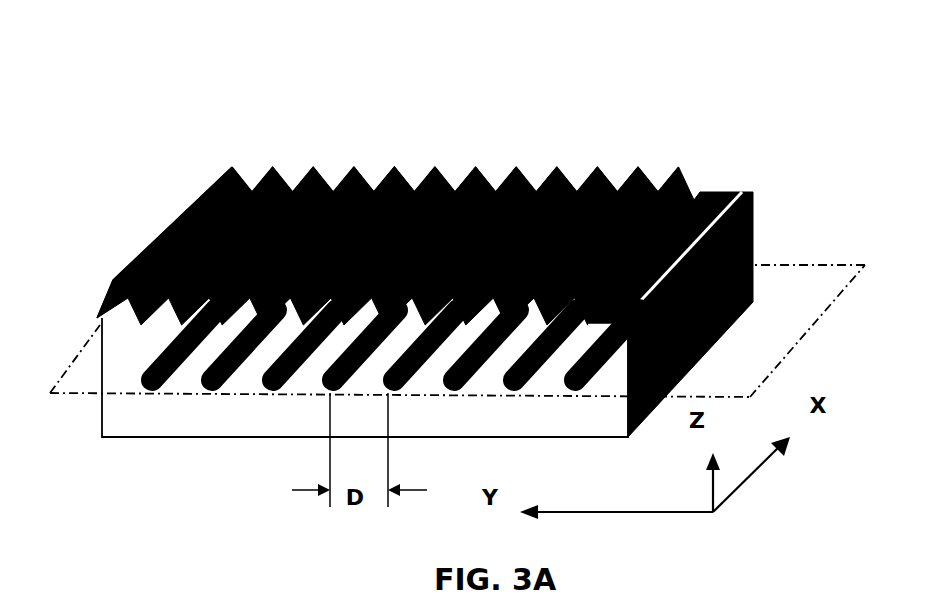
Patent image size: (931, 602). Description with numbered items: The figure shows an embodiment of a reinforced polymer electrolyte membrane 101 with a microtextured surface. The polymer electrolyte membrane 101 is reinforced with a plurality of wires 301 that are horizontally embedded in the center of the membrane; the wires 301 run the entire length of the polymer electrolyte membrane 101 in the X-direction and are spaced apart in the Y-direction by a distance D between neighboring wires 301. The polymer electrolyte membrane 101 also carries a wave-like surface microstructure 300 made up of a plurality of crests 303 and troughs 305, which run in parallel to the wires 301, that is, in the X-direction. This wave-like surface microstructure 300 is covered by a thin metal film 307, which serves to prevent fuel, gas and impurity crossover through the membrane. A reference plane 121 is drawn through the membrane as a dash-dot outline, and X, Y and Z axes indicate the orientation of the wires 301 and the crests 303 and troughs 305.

The wave-like surface microstructure 300 is at (452, 277).
The wires 301 is at (162, 386).
The crests 303 is at (290, 185).
The troughs 305 is at (371, 170).
The thin metal film 307 is at (113, 280).
The polymer electrolyte membrane 101 is at (594, 434).
The reference plane 121 is at (457, 331).